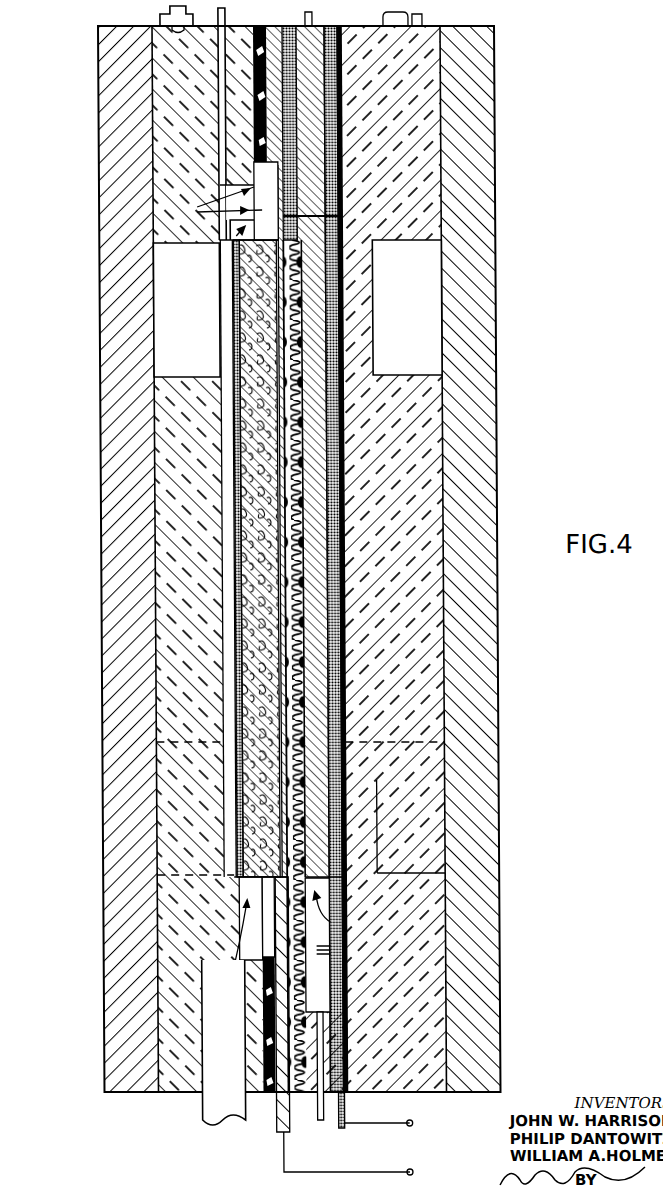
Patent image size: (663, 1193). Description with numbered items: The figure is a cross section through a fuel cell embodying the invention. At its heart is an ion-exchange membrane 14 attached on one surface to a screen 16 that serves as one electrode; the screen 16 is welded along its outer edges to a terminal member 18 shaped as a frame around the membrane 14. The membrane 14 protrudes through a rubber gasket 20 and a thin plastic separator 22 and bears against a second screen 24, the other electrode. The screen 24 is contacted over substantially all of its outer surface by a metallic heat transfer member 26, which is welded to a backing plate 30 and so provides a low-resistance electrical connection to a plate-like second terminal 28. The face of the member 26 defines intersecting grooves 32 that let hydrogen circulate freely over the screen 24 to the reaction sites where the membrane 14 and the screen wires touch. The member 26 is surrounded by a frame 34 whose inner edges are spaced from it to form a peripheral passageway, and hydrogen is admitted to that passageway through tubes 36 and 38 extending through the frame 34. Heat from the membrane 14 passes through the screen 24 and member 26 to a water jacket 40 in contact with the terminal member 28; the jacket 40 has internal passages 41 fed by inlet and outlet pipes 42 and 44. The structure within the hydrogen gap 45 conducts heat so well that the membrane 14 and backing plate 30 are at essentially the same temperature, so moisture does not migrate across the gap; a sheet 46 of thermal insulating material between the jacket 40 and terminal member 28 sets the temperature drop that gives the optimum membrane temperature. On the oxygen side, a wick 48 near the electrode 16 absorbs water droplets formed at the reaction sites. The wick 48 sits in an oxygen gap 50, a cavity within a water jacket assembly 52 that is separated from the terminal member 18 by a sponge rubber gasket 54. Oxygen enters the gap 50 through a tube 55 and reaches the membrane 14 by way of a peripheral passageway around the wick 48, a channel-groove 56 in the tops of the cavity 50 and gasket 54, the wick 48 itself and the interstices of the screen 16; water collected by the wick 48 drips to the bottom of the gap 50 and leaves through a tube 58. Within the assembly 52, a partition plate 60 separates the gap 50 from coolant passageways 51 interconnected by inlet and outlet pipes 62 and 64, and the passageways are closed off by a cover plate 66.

The ion-exchange membrane 14 is at (287, 803).
The screen 16 is at (289, 656).
The terminal member 18 is at (264, 72).
The rubber gasket 20 is at (300, 118).
The thin plastic separator 22 is at (373, 559).
The second screen 24 is at (300, 348).
The metallic heat transfer member 26 is at (318, 443).
The second terminal 28 is at (327, 557).
The backing plate 30 is at (342, 492).
The intersecting grooves 32 is at (312, 708).
The frame 34 is at (337, 127).
The tube 36 is at (305, 18).
The tube 38 is at (315, 1122).
The water jacket 40 is at (504, 153).
The internal passages 41 is at (392, 350).
The inlet pipe 42 is at (385, 20).
The outlet pipe 44 is at (418, 20).
The hydrogen gap 45 is at (341, 914).
The sheet of thermal insulating material 46 is at (338, 648).
The wick 48 is at (252, 558).
The oxygen gap 50 is at (234, 238).
The coolant passageways 51 is at (170, 345).
The water jacket assembly 52 is at (83, 272).
The sponge rubber gasket 54 is at (260, 118).
The tube 55 is at (225, 14).
The channel-groove 56 is at (216, 205).
The tube 58 is at (200, 1122).
The partition plate 60 is at (218, 525).
The inlet pipe 62 is at (160, 15).
The outlet pipe 64 is at (184, 31).
The cover plate 66 is at (104, 396).